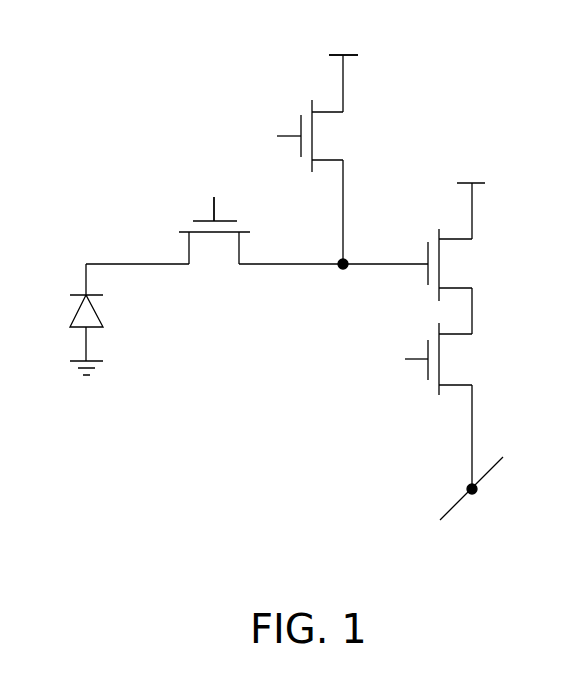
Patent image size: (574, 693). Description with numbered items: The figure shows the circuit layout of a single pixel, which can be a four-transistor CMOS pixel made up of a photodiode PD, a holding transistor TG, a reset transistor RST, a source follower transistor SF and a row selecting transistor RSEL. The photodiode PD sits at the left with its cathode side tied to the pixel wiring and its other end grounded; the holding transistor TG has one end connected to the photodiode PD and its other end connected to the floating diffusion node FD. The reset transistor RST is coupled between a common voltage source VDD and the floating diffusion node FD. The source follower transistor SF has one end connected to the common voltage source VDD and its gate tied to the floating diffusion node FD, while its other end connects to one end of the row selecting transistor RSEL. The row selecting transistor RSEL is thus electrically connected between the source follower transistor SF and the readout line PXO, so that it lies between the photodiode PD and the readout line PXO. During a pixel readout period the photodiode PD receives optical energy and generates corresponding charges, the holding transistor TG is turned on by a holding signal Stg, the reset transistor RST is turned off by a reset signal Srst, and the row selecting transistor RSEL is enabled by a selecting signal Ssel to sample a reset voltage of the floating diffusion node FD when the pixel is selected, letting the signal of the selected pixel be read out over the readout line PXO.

The photodiode PD is at (64, 319).
The holding transistor TG is at (214, 250).
The holding signal Stg is at (216, 194).
The reset transistor RST is at (347, 113).
The reset signal Srst is at (265, 139).
The common voltage source VDD is at (409, 98).
The floating diffusion node FD is at (346, 282).
The source follower transistor SF is at (465, 265).
The row selecting transistor RSEL is at (481, 359).
The selecting signal Ssel is at (390, 360).
The readout line PXO is at (443, 504).